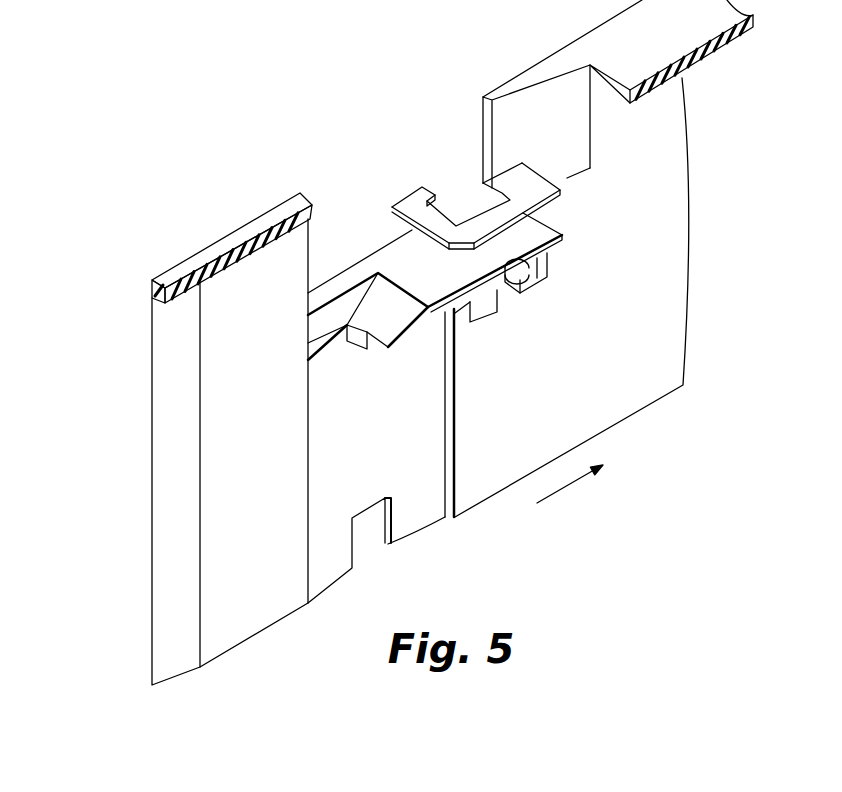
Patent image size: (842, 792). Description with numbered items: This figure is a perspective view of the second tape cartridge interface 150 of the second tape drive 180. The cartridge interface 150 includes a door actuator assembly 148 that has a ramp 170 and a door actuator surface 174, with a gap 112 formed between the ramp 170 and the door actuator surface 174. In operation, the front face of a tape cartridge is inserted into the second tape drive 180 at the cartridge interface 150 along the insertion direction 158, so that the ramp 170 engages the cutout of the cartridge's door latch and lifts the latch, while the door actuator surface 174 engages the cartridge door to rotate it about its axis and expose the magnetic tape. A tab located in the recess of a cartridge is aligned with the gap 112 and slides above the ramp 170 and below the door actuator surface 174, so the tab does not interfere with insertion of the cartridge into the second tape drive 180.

The gap 112 is at (384, 224).
The door actuator assembly 148 is at (578, 246).
The second tape cartridge interface 150 is at (152, 455).
The insertion direction 158 is at (562, 487).
The ramp 170 is at (388, 328).
The door actuator surface 174 is at (397, 203).
The second tape drive 180 is at (190, 172).